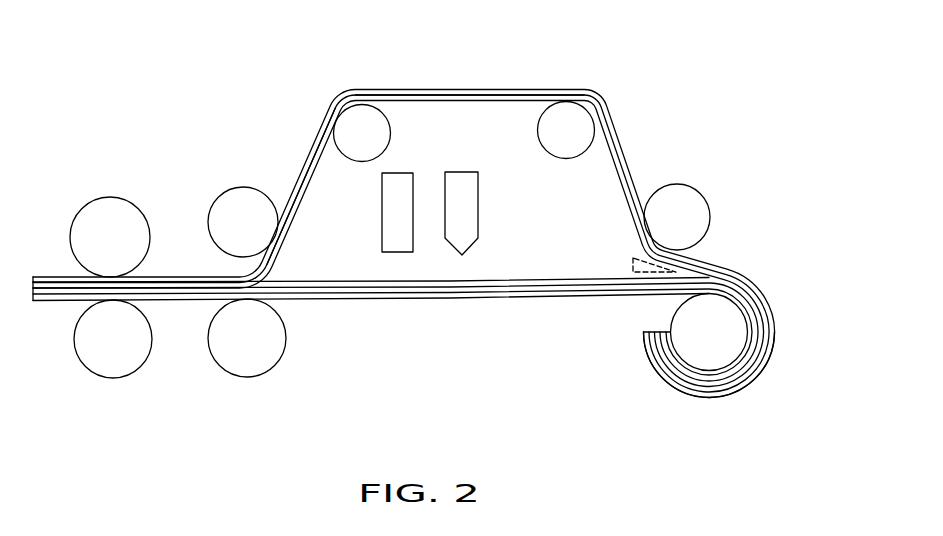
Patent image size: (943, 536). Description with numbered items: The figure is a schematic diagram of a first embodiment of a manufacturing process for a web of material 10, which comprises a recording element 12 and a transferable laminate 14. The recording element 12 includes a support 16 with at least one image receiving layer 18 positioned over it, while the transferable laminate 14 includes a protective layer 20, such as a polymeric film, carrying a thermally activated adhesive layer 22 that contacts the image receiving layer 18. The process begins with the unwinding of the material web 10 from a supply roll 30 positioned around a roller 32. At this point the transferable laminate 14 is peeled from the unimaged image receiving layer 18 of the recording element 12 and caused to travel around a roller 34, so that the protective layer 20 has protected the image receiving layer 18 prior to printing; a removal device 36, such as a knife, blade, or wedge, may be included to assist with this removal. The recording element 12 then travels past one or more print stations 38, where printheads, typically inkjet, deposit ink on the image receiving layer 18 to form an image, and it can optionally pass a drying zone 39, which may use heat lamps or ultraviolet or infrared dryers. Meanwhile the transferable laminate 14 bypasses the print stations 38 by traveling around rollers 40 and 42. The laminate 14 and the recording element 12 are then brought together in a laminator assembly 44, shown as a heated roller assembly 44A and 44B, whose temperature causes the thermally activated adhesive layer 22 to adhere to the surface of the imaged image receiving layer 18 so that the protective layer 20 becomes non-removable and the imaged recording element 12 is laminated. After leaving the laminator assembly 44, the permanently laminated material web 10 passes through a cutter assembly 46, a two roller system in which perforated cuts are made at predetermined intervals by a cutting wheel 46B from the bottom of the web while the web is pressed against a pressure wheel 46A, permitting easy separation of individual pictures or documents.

The web of material 10 is at (795, 393).
The recording element 12 is at (378, 313).
The transferable laminate 14 is at (673, 143).
The support 16 is at (495, 293).
The image receiving layer 18 is at (525, 278).
The protective layer 20 is at (492, 88).
The thermally activated adhesive layer 22 is at (280, 255).
The supply roll 30 is at (672, 387).
The roller 32 is at (686, 321).
The roller 34 is at (698, 213).
The removal device 36 is at (633, 262).
The print station 38 is at (477, 202).
The drying zone 39 is at (383, 208).
The roller 40 is at (547, 131).
The roller 42 is at (377, 128).
The laminator assembly 44 is at (247, 122).
The heated roller 44A is at (223, 200).
The heated roller 44B is at (245, 362).
The cutter assembly 46 is at (100, 133).
The pressure wheel 46A is at (100, 210).
The cutting wheel 46B is at (98, 360).